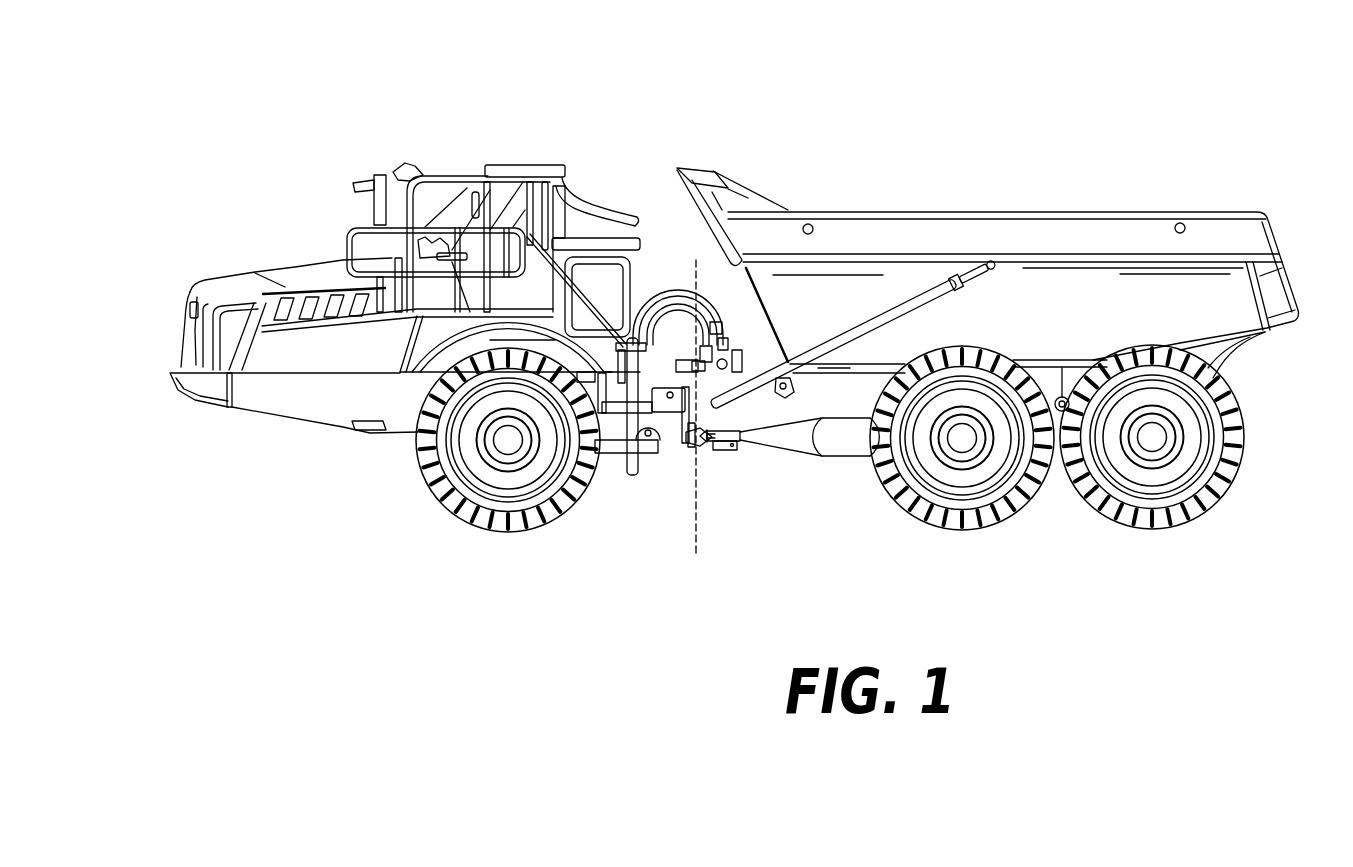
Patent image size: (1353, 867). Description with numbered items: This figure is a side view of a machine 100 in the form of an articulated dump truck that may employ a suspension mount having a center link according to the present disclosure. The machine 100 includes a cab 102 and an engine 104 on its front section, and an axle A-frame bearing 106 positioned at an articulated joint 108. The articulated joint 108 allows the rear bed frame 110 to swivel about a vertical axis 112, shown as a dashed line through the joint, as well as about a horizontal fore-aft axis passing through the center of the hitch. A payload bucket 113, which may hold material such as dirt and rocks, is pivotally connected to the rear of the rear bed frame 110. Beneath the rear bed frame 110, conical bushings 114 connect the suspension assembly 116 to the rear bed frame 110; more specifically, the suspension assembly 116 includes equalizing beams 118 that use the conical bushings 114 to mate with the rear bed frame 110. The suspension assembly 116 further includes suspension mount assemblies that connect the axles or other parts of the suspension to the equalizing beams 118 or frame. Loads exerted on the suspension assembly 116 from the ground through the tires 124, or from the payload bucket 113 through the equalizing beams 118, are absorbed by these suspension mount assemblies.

The machine 100 is at (705, 95).
The cab 102 is at (507, 168).
The engine 104 is at (283, 273).
The axle A-frame bearing 106 is at (750, 447).
The articulated joint 108 is at (675, 290).
The rear bed frame 110 is at (840, 402).
The vertical axis 112 is at (697, 485).
The payload bucket 113 is at (1007, 200).
The conical bushings 114 is at (1060, 363).
The suspension assembly 116 is at (1071, 356).
The equalizing beams 118 is at (1088, 360).
The tires 124 is at (957, 530).